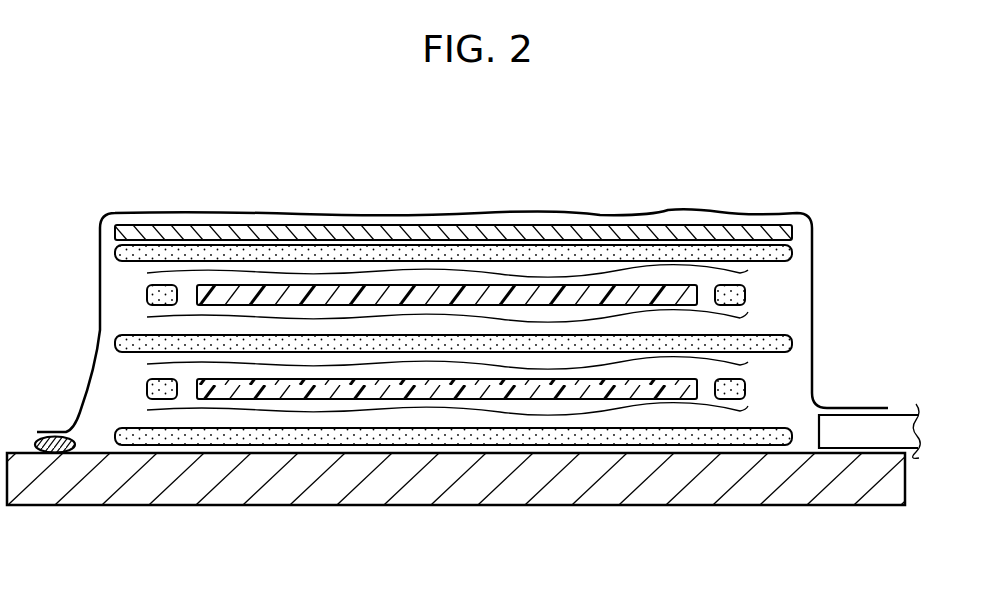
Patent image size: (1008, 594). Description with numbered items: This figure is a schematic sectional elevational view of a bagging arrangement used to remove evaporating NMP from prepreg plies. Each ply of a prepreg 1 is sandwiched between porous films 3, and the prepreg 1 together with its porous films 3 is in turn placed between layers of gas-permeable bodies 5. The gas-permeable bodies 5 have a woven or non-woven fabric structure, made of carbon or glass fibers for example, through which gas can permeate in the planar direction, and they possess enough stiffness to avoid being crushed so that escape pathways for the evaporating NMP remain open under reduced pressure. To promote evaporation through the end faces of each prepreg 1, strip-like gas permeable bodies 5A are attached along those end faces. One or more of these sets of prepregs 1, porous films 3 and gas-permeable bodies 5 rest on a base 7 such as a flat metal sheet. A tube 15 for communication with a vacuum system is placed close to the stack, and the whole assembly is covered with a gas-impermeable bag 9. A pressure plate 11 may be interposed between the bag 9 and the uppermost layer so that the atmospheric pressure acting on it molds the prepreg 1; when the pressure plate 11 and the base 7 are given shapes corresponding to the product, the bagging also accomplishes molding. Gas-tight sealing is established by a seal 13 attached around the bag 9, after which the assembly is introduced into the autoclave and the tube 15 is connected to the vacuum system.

The prepreg 1 is at (385, 392).
The porous film 3 is at (743, 272).
The gas-permeable body 5 is at (173, 250).
The strip-like gas permeable body 5A is at (147, 295).
The base 7 is at (462, 504).
The gas-impermeable bag 9 is at (551, 214).
The pressure plate 11 is at (658, 228).
The seal 13 is at (62, 452).
The tube 15 is at (902, 423).